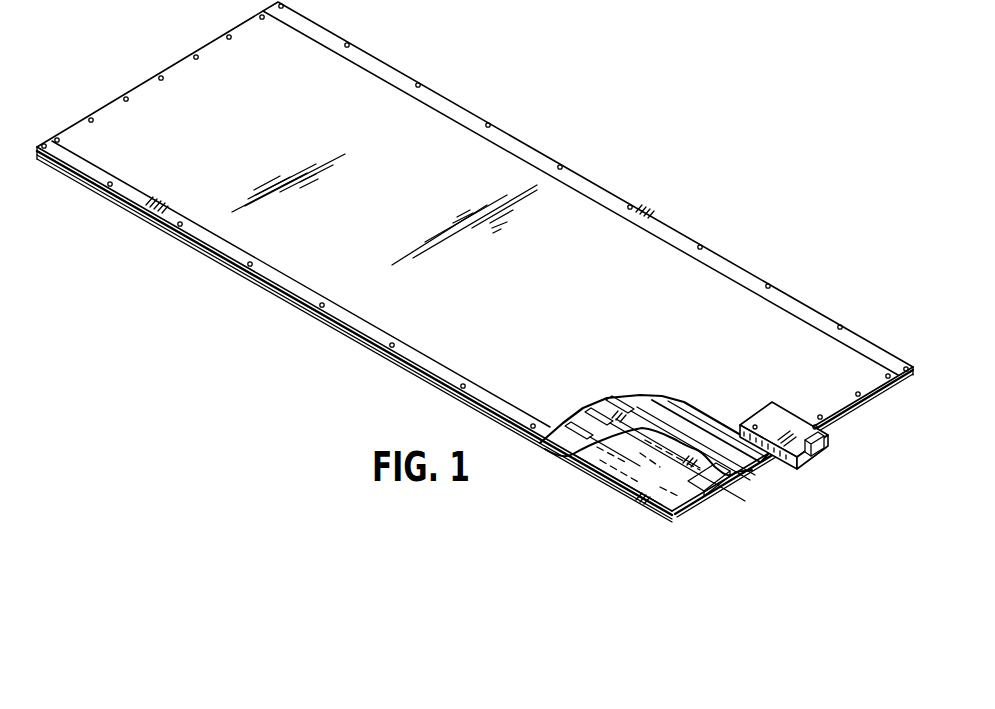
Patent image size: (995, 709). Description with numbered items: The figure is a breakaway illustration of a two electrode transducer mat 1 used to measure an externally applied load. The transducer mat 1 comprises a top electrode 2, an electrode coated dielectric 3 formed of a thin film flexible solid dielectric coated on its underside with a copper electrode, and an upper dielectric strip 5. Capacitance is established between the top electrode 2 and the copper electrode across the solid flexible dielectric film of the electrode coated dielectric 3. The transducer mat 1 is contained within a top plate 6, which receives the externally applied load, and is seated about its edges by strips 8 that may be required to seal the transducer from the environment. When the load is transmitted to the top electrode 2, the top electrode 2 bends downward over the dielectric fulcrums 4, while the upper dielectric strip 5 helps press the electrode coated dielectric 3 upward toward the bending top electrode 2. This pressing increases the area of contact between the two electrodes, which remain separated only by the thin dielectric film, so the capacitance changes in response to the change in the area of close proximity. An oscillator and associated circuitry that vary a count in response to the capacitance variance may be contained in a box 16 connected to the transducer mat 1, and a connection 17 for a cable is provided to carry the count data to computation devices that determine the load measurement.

The transducer mat 1 is at (665, 149).
The top electrode 2 is at (580, 430).
The electrode coated dielectric 3 is at (658, 470).
The dielectric fulcrums 4 is at (620, 463).
The upper dielectric strip 5 is at (685, 488).
The top plate 6 is at (688, 286).
The strips 8 is at (405, 351).
The box 16 is at (800, 423).
The connection 17 is at (812, 448).